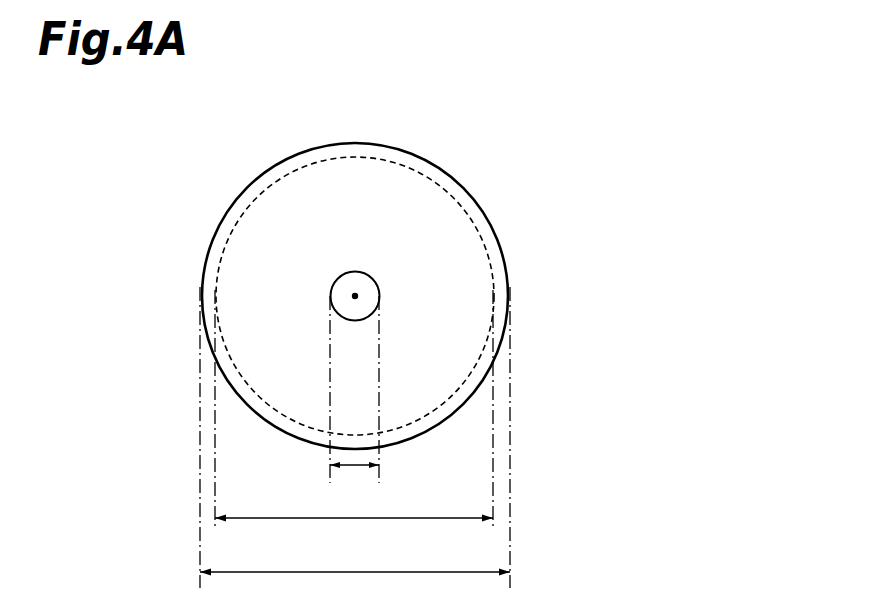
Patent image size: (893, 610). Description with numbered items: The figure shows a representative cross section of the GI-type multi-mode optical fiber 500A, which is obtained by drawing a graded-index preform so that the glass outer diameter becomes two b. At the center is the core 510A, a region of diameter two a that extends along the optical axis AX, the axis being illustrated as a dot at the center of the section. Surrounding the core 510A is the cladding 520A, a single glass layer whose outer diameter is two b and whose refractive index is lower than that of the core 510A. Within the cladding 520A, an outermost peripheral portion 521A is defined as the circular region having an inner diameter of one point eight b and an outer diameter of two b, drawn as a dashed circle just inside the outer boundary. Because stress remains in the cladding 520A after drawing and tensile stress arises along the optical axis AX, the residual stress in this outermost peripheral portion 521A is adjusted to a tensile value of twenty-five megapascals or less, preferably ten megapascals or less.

The GI-type multi-mode optical fiber 500A is at (430, 147).
The cladding 520A is at (360, 217).
The outermost peripheral portion 521A is at (263, 182).
The core 510A is at (343, 287).
The optical axis AX is at (357, 293).